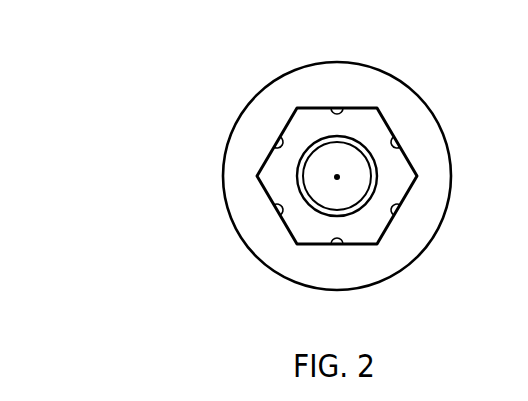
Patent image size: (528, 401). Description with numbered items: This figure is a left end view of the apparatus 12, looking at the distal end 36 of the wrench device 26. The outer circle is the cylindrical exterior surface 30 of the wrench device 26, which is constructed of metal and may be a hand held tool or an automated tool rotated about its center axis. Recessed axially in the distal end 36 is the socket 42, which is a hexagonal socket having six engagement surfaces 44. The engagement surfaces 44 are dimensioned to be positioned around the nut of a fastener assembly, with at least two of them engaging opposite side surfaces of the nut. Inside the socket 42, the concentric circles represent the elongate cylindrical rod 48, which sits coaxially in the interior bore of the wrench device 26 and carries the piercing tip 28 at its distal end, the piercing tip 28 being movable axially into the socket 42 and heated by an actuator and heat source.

The apparatus 12 is at (445, 90).
The wrench device 26 is at (230, 162).
The piercing tip 28 is at (337, 177).
The cylindrical exterior surface 30 is at (248, 102).
The distal end 36 is at (237, 195).
The socket 42 is at (315, 127).
The engagement surfaces 44 is at (281, 142).
The elongate cylindrical rod 48 is at (328, 200).